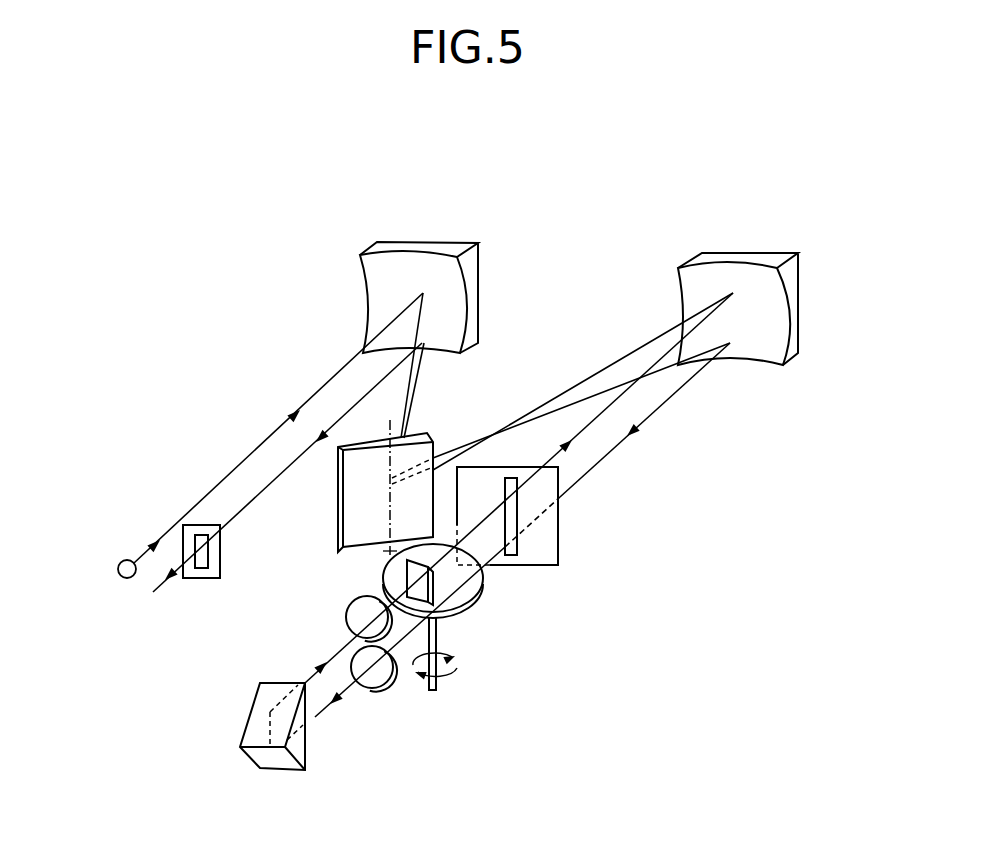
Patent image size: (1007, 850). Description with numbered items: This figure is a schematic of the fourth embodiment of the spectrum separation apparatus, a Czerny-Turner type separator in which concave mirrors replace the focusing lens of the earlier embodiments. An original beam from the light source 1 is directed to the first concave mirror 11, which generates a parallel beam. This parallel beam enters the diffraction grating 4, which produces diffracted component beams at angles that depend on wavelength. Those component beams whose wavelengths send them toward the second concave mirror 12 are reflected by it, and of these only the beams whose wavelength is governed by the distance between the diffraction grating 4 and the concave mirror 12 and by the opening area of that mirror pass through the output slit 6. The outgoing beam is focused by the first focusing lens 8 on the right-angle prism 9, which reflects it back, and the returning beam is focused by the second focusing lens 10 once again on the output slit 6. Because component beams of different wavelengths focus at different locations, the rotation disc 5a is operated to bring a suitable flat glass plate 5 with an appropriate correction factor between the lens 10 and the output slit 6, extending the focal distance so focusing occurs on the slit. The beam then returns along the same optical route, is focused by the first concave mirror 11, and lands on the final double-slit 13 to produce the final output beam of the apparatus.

The light source 1 is at (119, 563).
The diffraction grating 4 is at (440, 437).
The flat glass plate 5 is at (436, 578).
The rotation disc 5a is at (452, 604).
The output slit 6 is at (517, 552).
The first focusing lens 8 is at (386, 687).
The right-angle prism 9 is at (280, 771).
The second focusing lens 10 is at (350, 617).
The first concave mirror 11 is at (412, 242).
The second concave mirror 12 is at (733, 251).
The double-slit 13 is at (199, 578).